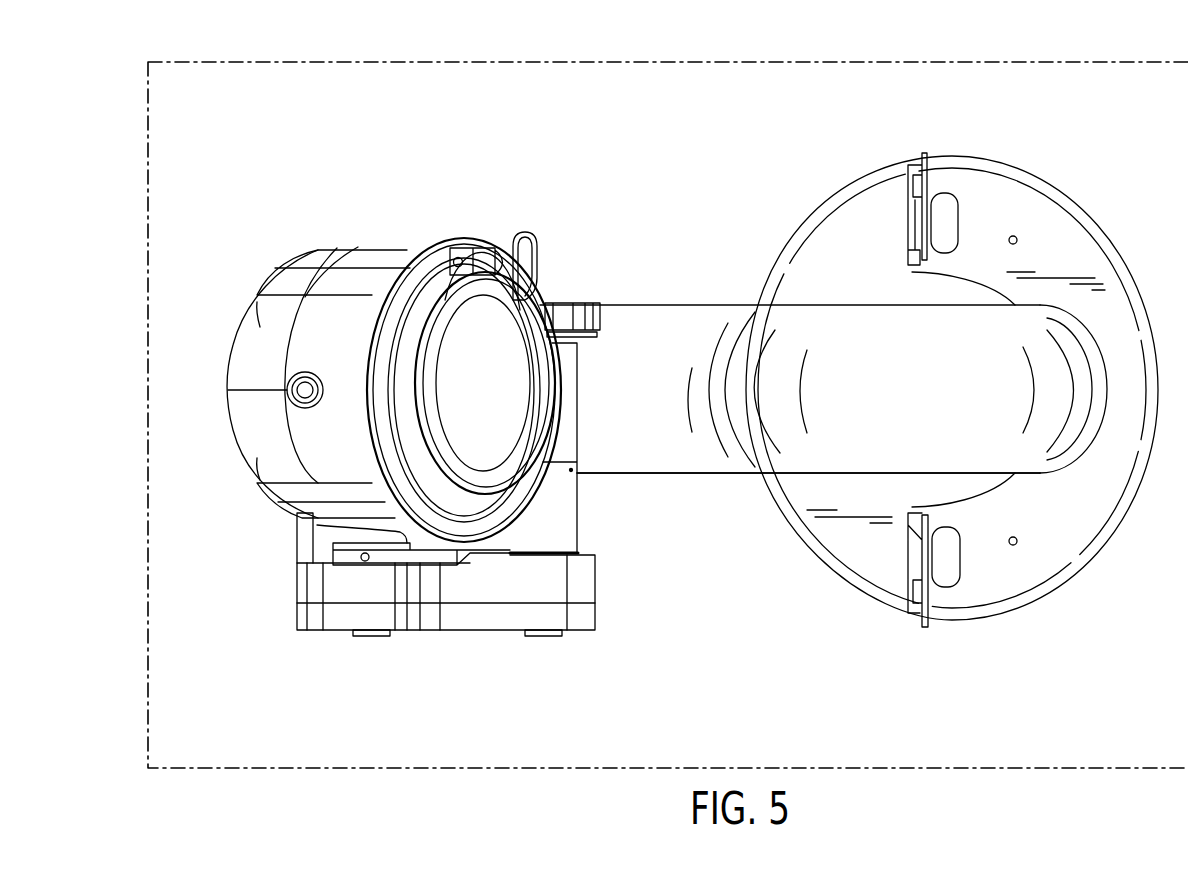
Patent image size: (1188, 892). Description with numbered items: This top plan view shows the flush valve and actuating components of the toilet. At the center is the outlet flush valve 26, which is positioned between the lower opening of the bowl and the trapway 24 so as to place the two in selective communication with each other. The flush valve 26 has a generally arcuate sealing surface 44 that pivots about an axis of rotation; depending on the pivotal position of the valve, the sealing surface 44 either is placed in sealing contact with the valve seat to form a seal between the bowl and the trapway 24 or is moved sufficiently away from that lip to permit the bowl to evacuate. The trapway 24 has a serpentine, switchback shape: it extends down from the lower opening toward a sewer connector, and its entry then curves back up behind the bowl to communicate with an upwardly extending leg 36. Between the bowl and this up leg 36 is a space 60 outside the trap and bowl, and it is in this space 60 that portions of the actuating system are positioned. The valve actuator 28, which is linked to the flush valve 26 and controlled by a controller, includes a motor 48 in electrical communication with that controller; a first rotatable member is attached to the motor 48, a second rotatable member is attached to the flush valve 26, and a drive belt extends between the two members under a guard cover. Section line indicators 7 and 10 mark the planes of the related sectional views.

The section line 7- 7 is at (262, 608).
The camera assembly section line 10- 10 is at (175, 392).
The trapway 24 is at (712, 302).
The outlet flush valve 26 is at (468, 343).
The valve actuator 28 is at (548, 549).
The upwardly extending leg 36 is at (707, 465).
The generally arcuate sealing surface 44 is at (469, 395).
The motor 48 is at (572, 425).
The space 60 is at (592, 348).